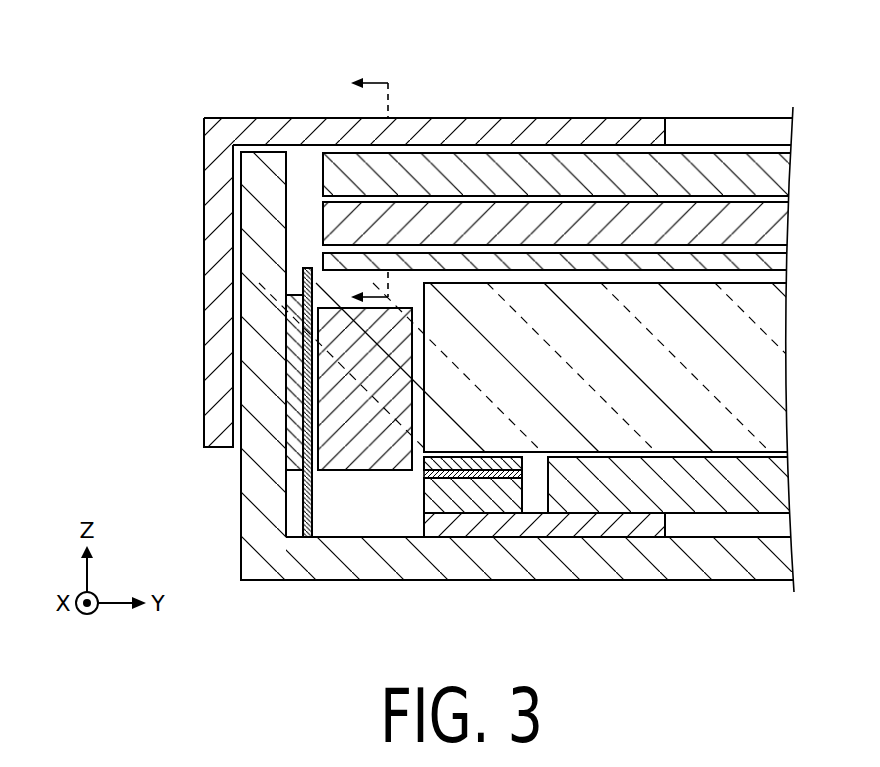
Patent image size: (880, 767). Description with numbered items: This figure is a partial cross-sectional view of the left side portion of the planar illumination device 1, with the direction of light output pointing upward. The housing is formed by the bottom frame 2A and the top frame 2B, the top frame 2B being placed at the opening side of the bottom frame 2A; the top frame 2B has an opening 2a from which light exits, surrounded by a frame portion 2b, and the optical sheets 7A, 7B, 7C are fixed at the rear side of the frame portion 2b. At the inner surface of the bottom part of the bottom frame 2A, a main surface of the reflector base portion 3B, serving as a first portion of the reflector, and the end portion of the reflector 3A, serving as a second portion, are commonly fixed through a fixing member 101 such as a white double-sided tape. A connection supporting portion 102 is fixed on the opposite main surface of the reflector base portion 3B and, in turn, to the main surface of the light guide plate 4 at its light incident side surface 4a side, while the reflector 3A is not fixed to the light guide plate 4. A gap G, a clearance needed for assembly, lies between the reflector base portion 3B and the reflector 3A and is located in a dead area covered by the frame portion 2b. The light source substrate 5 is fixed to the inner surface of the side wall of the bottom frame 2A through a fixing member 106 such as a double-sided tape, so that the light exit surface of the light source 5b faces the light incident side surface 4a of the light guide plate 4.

The planar illumination device 1 is at (186, 100).
The bottom frame 2A is at (253, 520).
The top frame 2B is at (220, 215).
The opening 2a is at (666, 131).
The frame portion 2b is at (505, 132).
The reflector 3A is at (765, 485).
The reflector base portion 3B is at (442, 502).
The light guide plate 4 is at (765, 368).
The light incident side surface 4a is at (425, 368).
The light source substrate 5 is at (307, 518).
The light source 5b is at (362, 438).
The optical sheet 7A is at (763, 258).
The optical sheet 7B is at (763, 222).
The optical sheet 7C is at (763, 173).
The fixing member 101 is at (562, 528).
The connection supporting portion 102 is at (536, 463).
The fixing member 106 is at (293, 454).
The gap G is at (535, 512).